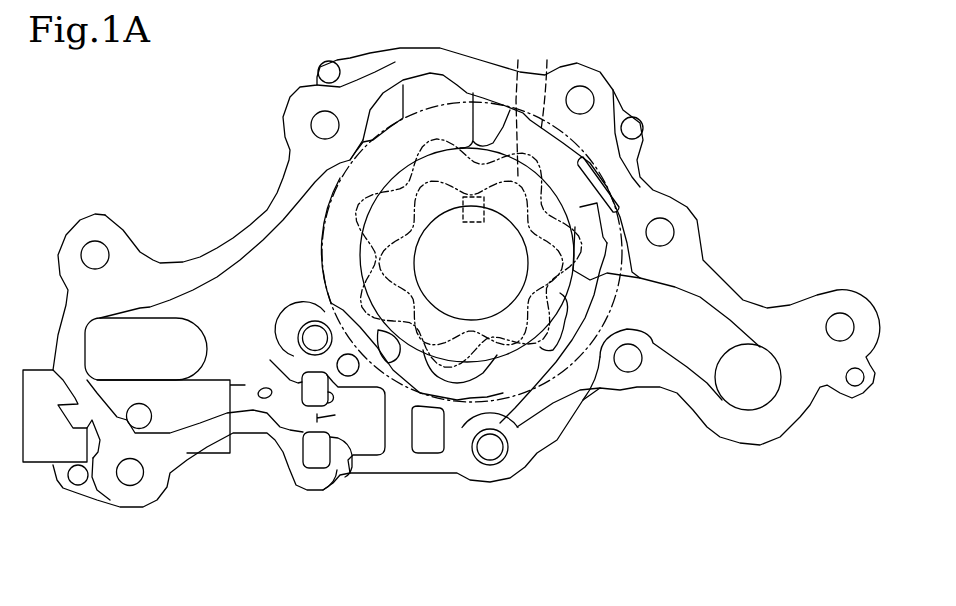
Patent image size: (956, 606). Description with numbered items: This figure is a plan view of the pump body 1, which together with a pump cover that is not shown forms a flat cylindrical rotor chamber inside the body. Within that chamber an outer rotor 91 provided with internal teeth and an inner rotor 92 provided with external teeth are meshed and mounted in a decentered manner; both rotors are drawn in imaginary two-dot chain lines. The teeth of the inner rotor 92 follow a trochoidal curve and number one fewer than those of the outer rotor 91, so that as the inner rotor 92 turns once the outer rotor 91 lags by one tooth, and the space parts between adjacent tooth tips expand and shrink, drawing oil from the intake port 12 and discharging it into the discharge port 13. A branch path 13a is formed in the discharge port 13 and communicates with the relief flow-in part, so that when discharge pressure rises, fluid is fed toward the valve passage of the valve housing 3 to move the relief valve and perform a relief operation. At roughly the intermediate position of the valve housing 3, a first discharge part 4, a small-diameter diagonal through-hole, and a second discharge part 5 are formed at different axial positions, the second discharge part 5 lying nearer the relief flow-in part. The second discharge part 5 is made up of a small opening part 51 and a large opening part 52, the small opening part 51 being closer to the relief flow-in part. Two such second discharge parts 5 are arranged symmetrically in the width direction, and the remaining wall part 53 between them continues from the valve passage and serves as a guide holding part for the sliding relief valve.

The pump body 1 is at (668, 186).
The valve housing 3 is at (294, 415).
The first discharge part 4 is at (262, 389).
The second discharge part 5 is at (301, 384).
The intake port 12 is at (150, 351).
The discharge port 13 is at (747, 396).
The branch path 13a is at (450, 432).
The small opening part 51 is at (344, 458).
The large opening part 52 is at (323, 460).
The remaining wall part 53 is at (335, 415).
The outer rotor 91 is at (557, 52).
The inner rotor 92 is at (519, 60).